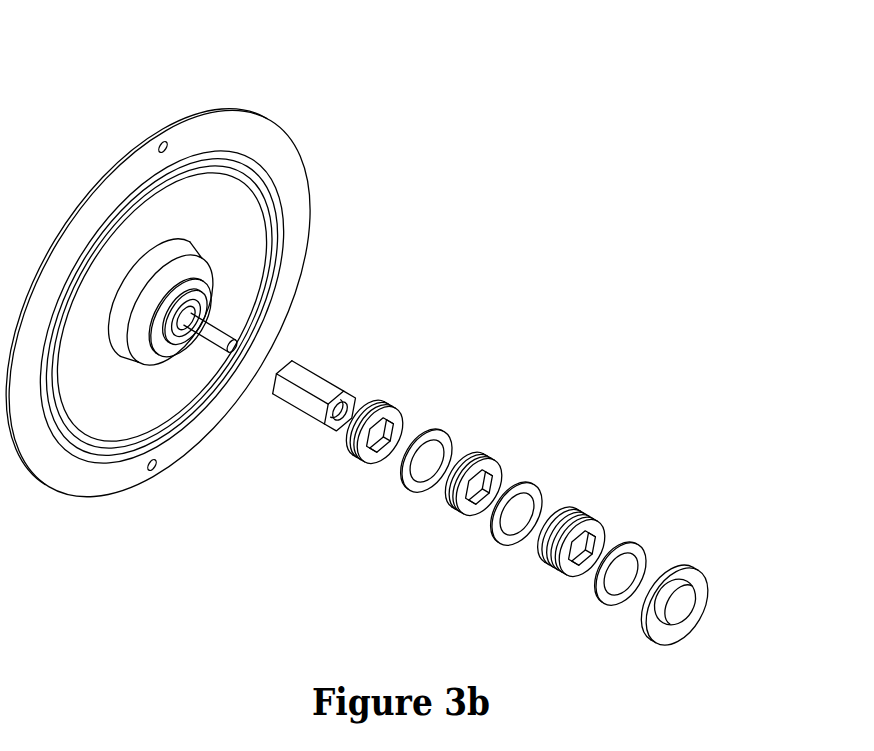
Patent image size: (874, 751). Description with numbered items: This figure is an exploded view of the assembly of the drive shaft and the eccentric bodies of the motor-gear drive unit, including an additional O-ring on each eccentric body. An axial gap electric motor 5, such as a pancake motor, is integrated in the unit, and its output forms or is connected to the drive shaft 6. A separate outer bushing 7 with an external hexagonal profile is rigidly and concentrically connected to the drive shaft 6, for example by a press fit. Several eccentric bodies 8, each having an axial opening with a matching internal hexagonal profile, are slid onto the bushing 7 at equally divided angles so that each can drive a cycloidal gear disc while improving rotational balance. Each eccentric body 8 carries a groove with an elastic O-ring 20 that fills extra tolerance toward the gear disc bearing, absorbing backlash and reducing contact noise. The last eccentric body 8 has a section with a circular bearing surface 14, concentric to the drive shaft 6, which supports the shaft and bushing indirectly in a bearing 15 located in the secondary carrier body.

The motor 5 is at (247, 139).
The drive shaft 6 is at (215, 338).
The separate outer bushing 7 is at (322, 390).
The eccentric body 8 is at (527, 350).
The section having a bearing surface 14 is at (578, 528).
The O-ring on eccentric body 20 is at (441, 437).
The drive shaft/bushing bearing 15 is at (672, 568).